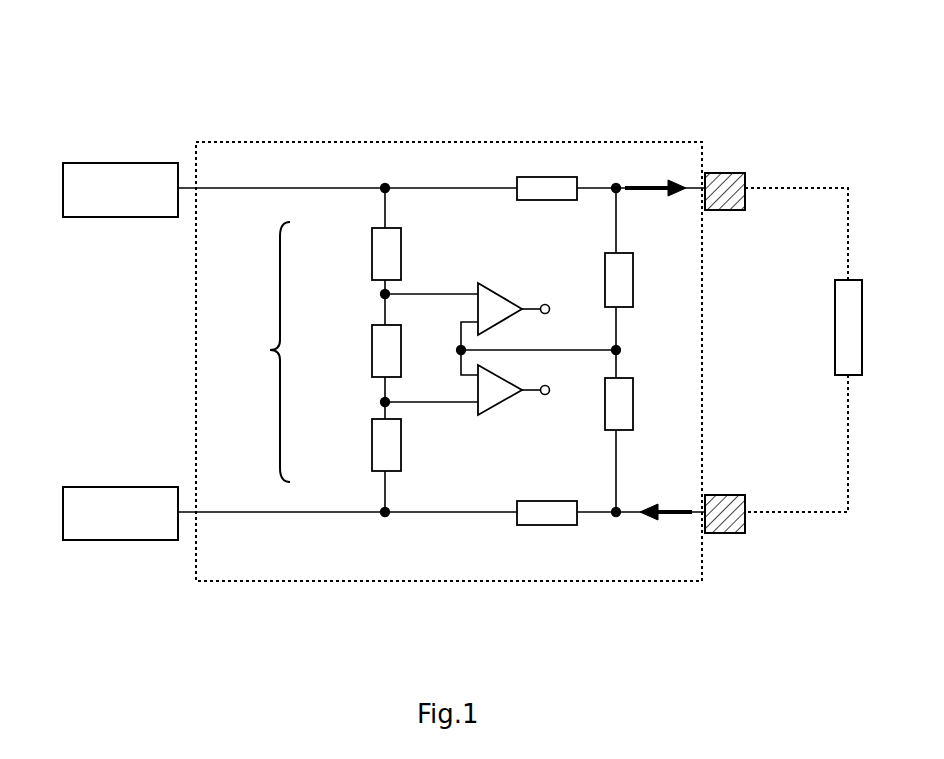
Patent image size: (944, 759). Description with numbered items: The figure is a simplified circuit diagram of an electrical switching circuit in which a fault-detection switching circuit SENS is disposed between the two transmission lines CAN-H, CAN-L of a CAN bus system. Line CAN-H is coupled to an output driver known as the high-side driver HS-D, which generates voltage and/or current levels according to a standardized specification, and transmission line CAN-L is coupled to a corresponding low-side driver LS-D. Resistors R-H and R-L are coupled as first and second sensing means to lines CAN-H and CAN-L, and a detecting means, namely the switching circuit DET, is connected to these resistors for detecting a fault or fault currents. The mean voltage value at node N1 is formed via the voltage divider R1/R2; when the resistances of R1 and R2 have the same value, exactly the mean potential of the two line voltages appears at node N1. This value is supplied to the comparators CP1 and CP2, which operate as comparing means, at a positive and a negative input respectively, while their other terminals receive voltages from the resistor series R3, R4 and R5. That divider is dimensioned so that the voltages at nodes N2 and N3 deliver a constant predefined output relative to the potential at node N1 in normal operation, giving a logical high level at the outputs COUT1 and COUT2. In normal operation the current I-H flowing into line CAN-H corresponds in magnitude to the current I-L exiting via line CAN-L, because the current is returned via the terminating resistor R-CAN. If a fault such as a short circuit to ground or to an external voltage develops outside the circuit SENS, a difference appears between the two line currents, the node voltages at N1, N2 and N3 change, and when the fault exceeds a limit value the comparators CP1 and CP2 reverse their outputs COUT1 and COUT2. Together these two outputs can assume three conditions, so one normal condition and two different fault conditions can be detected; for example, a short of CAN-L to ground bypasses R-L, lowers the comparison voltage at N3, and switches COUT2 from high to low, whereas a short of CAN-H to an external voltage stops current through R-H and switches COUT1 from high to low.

The fault-detection switching circuit SENS is at (405, 131).
The high-side driver HS-D is at (120, 190).
The low-side driver LS-D is at (120, 513).
The resistor R-H is at (547, 174).
The resistor R-L is at (547, 526).
The resistor R1 is at (642, 280).
The resistor R2 is at (642, 404).
The resistor R3 is at (359, 254).
The resistor R4 is at (359, 351).
The resistor R5 is at (359, 445).
The switching circuit DET is at (246, 352).
The node N1 is at (553, 348).
The node N2 is at (417, 295).
The node N3 is at (417, 402).
The comparator CP1 is at (504, 293).
The comparator CP2 is at (504, 404).
The output COUT1 is at (561, 298).
The output COUT2 is at (563, 403).
The current flowing into line CAN-H I-H is at (655, 172).
The current exiting via line CAN-L I-L is at (666, 528).
The transmission line CAN-H is at (739, 176).
The transmission line CAN-L is at (738, 530).
The terminating resistor R-CAN is at (803, 350).